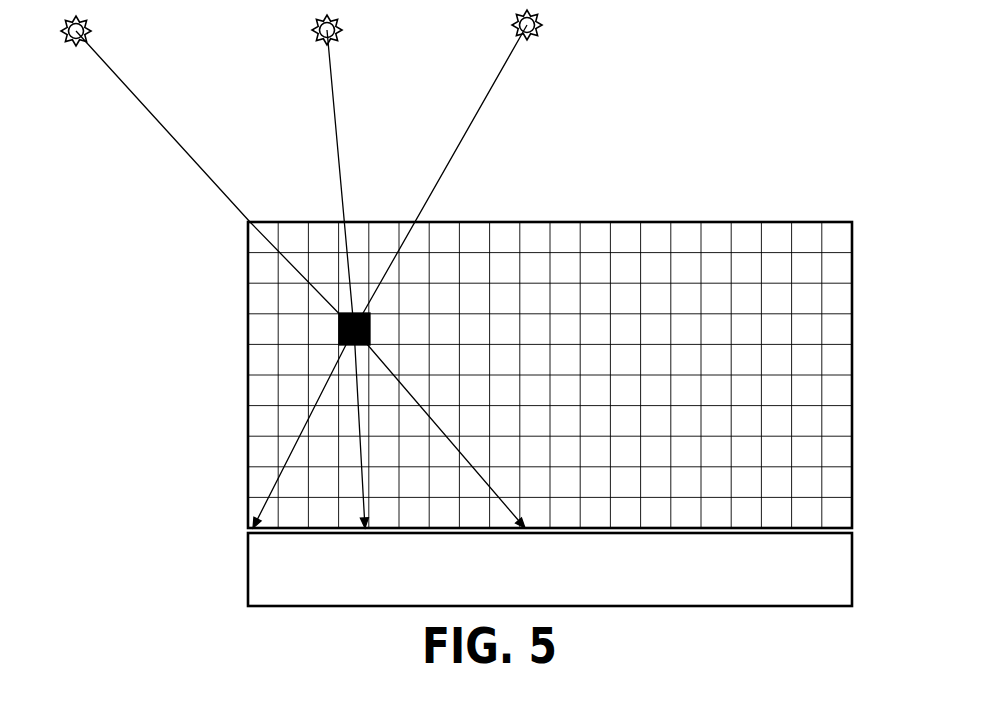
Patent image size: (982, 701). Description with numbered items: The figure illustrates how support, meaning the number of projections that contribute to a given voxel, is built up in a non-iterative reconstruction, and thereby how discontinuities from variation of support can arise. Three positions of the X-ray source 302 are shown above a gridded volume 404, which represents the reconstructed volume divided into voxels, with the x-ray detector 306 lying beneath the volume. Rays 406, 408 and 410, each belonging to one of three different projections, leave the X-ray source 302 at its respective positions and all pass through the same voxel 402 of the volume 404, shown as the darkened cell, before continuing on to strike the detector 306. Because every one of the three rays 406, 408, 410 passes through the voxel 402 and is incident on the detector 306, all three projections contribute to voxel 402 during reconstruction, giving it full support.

The X-ray source 302 is at (70, 46).
The x-ray detector 306 is at (248, 570).
The voxel 402 is at (327, 331).
The volume 404 is at (840, 207).
The ray 406 is at (155, 118).
The ray 408 is at (335, 115).
The ray 410 is at (490, 92).